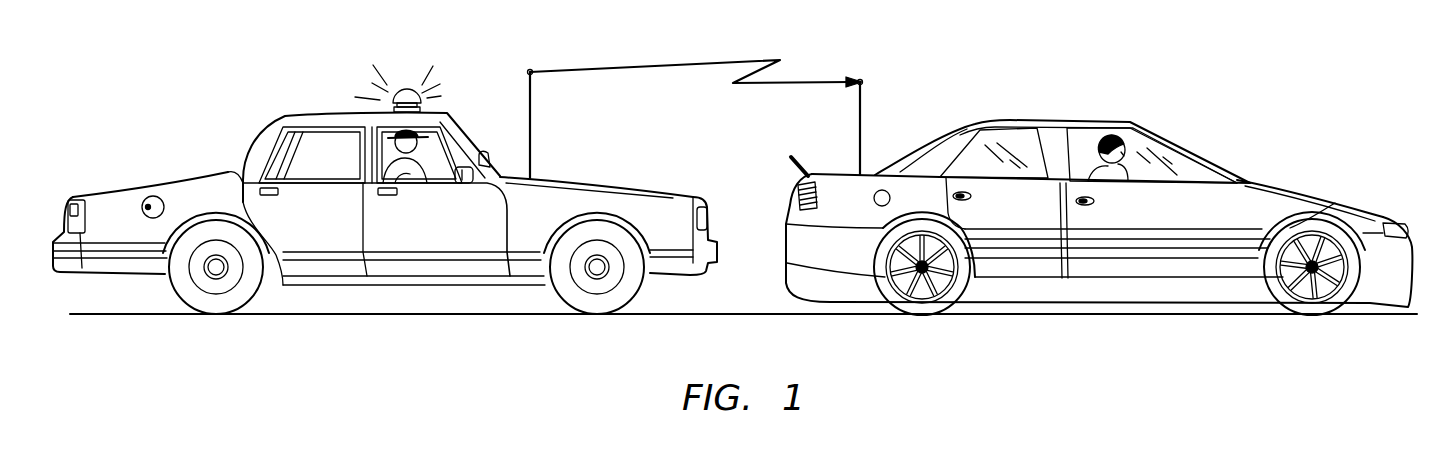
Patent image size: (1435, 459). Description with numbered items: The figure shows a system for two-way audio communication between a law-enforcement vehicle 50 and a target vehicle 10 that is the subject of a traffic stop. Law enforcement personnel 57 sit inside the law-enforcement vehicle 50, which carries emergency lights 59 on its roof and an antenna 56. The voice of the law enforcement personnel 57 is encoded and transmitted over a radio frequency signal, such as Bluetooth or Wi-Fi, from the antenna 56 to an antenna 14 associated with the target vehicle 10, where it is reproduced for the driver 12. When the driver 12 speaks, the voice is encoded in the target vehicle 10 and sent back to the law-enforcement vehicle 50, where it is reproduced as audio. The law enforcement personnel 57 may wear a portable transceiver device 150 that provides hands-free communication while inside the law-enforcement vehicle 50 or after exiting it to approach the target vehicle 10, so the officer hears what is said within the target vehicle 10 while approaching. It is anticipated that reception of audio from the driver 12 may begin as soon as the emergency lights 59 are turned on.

The target vehicle 10 is at (1274, 182).
The driver 12 is at (1100, 134).
The antenna 14 is at (862, 88).
The law-enforcement vehicle 50 is at (244, 144).
The antenna 56 is at (532, 132).
The law enforcement personnel 57 is at (393, 184).
The emergency lights 59 is at (405, 91).
The portable transceiver device 150 is at (440, 128).